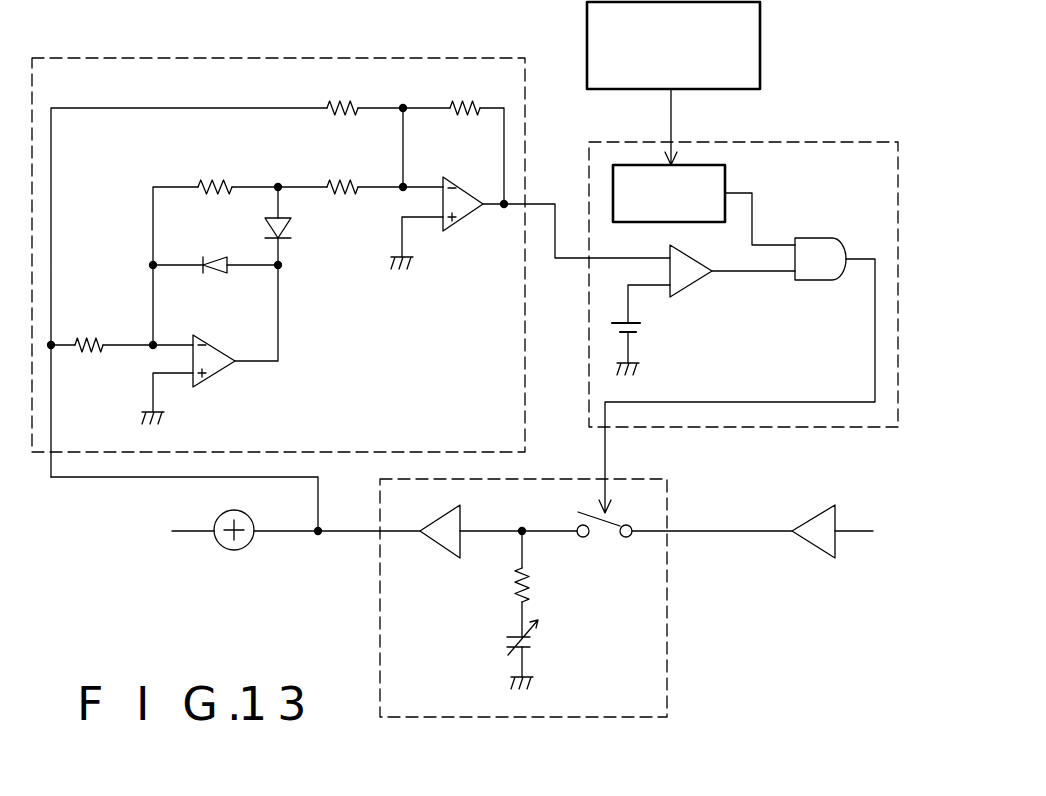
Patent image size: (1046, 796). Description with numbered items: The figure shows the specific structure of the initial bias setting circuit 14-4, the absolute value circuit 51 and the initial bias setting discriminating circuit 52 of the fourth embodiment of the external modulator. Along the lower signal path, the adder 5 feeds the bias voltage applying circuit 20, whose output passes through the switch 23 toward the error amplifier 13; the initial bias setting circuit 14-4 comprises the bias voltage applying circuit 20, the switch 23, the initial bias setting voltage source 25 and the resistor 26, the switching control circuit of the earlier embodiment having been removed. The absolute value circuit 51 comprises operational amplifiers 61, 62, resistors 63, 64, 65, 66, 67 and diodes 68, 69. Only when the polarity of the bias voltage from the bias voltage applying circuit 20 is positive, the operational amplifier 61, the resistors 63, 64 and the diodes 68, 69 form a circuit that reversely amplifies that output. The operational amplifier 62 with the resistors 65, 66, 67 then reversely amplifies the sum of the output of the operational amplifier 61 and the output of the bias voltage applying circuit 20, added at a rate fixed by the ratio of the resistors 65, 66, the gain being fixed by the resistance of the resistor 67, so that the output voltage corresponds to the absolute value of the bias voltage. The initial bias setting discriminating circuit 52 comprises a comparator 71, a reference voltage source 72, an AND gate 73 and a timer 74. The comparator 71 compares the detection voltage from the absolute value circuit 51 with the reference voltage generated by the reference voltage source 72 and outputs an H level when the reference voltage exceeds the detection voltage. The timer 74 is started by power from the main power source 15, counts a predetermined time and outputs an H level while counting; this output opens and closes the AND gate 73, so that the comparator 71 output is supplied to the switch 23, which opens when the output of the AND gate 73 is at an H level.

The absolute value circuit 51 is at (396, 57).
The initial bias setting discriminating circuit 52 is at (829, 142).
The initial bias setting circuit 14-4 is at (667, 661).
The main power source 15 is at (760, 58).
The timer 74 is at (725, 172).
The comparator 71 is at (697, 283).
The reference voltage source 72 is at (642, 328).
The AND gate 73 is at (815, 283).
The operational amplifier 61 is at (227, 367).
The operational amplifier 62 is at (470, 215).
The resistor 63 is at (92, 336).
The resistor 64 is at (219, 178).
The resistor 65 is at (350, 186).
The resistor 66 is at (352, 107).
The resistor 67 is at (472, 107).
The diode 68 is at (215, 277).
The diode 69 is at (293, 232).
The adder 5 is at (216, 546).
The bias voltage applying circuit 20 is at (427, 548).
The switch 23 is at (607, 540).
The initial bias setting voltage source 25 is at (505, 645).
The resistor 26 is at (511, 585).
The error amplifier 13 is at (805, 548).